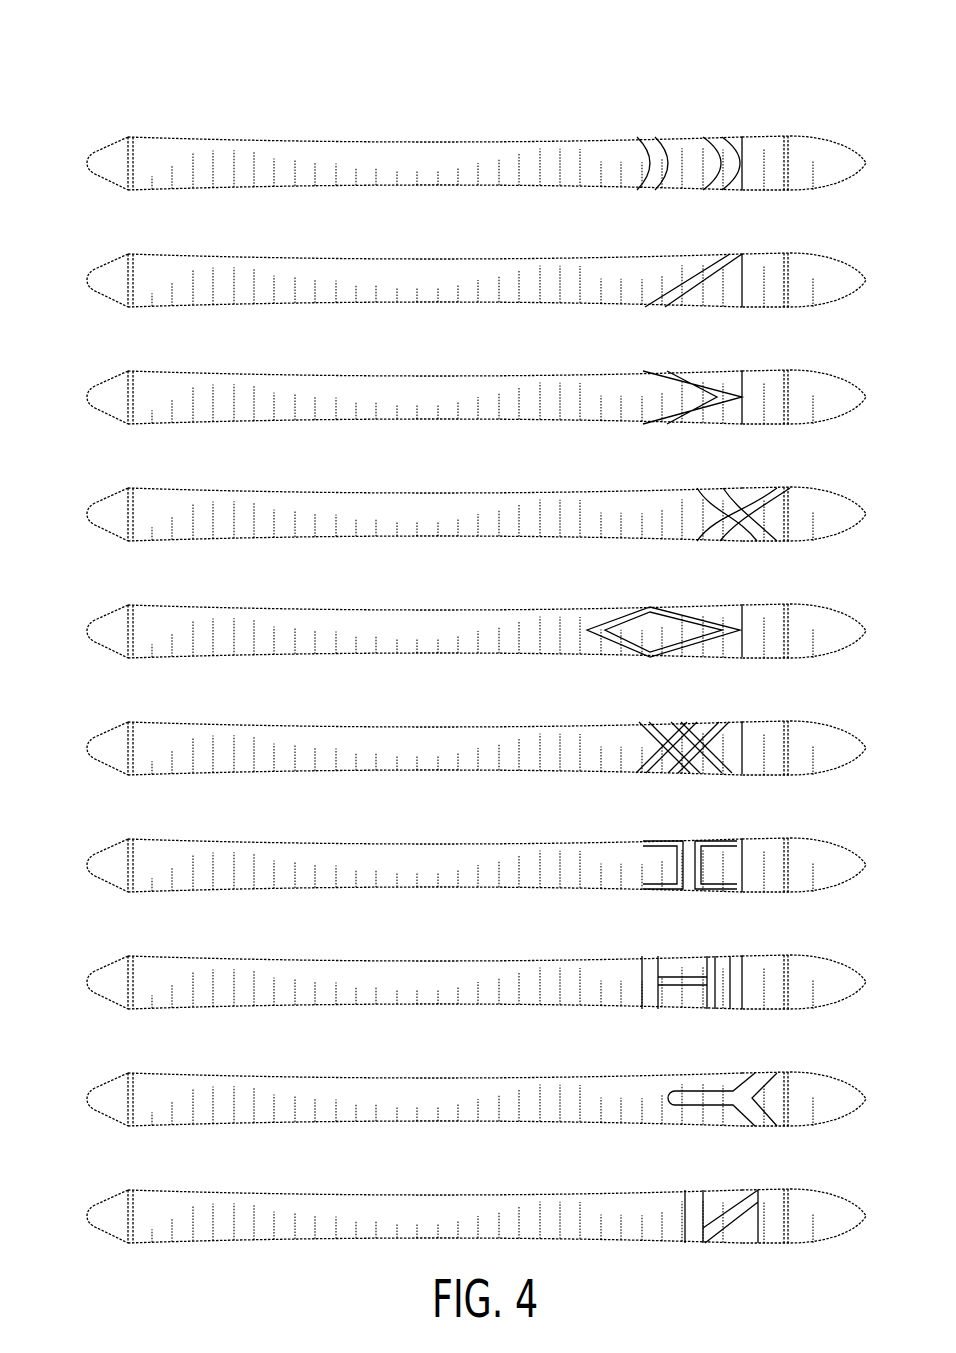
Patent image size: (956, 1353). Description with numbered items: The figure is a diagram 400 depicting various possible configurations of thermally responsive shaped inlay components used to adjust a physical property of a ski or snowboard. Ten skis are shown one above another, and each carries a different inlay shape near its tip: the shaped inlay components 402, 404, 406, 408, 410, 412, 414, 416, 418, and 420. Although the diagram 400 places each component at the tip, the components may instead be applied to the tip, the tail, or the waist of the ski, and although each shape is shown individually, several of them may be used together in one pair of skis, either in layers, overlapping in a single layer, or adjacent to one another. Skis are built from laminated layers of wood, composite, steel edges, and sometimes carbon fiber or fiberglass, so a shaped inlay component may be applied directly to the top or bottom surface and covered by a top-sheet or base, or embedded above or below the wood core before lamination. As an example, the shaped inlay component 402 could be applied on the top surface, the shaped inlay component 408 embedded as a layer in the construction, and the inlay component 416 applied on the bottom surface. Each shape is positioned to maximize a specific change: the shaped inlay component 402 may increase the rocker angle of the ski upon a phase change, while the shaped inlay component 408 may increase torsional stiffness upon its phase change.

The diagram 400 is at (100, 73).
The shaped inlay component 402 is at (742, 137).
The shaped inlay component 404 is at (742, 254).
The shaped inlay component 406 is at (680, 372).
The shaped inlay component 408 is at (790, 486).
The shaped inlay component 410 is at (675, 606).
The shaped inlay component 412 is at (742, 720).
The shaped inlay component 414 is at (713, 838).
The inlay component 416 is at (742, 955).
The shaped inlay component 418 is at (788, 1071).
The shaped inlay component 420 is at (788, 1188).